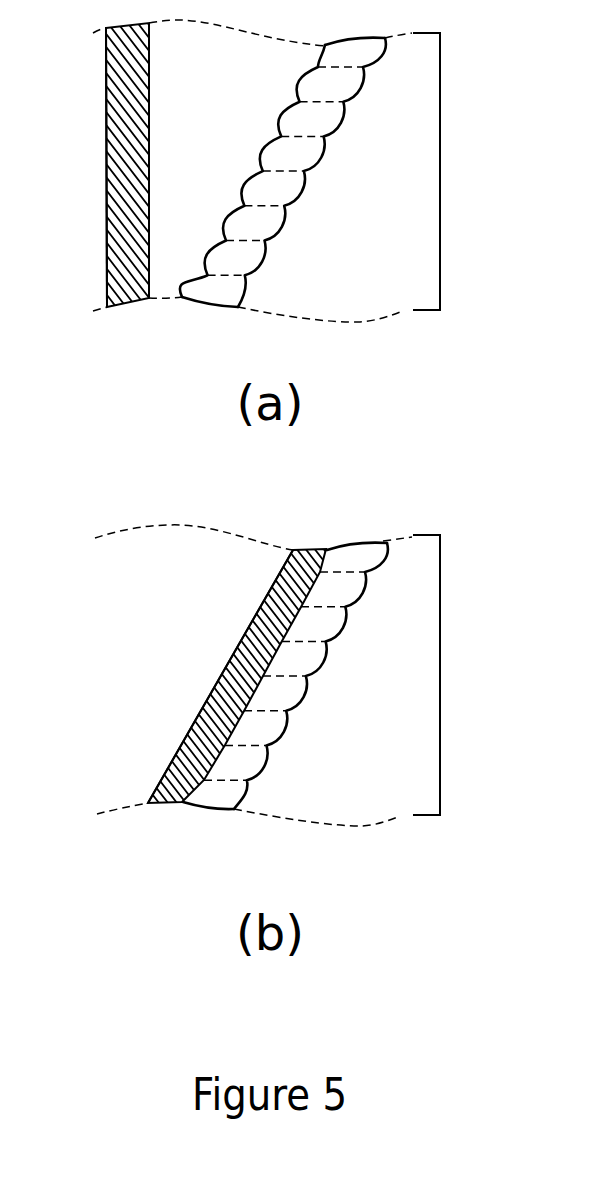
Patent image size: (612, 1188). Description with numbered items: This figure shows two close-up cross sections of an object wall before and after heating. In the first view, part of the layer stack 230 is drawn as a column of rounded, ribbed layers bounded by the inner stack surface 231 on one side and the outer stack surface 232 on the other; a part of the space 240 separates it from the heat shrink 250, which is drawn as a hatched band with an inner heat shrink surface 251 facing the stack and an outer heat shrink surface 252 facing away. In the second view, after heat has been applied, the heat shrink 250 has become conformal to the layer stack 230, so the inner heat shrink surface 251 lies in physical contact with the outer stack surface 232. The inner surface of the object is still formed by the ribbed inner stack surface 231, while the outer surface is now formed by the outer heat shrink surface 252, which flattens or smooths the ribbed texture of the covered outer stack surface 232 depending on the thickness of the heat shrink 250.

The layer stack 230 is at (438, 87).
The inner stack surface 231 is at (322, 159).
The outer stack surface 232 is at (303, 88).
The space 240 is at (488, 174).
The heat shrink 250 is at (122, 263).
The inner heat shrink surface 251 is at (150, 161).
The outer heat shrink surface 252 is at (106, 87).